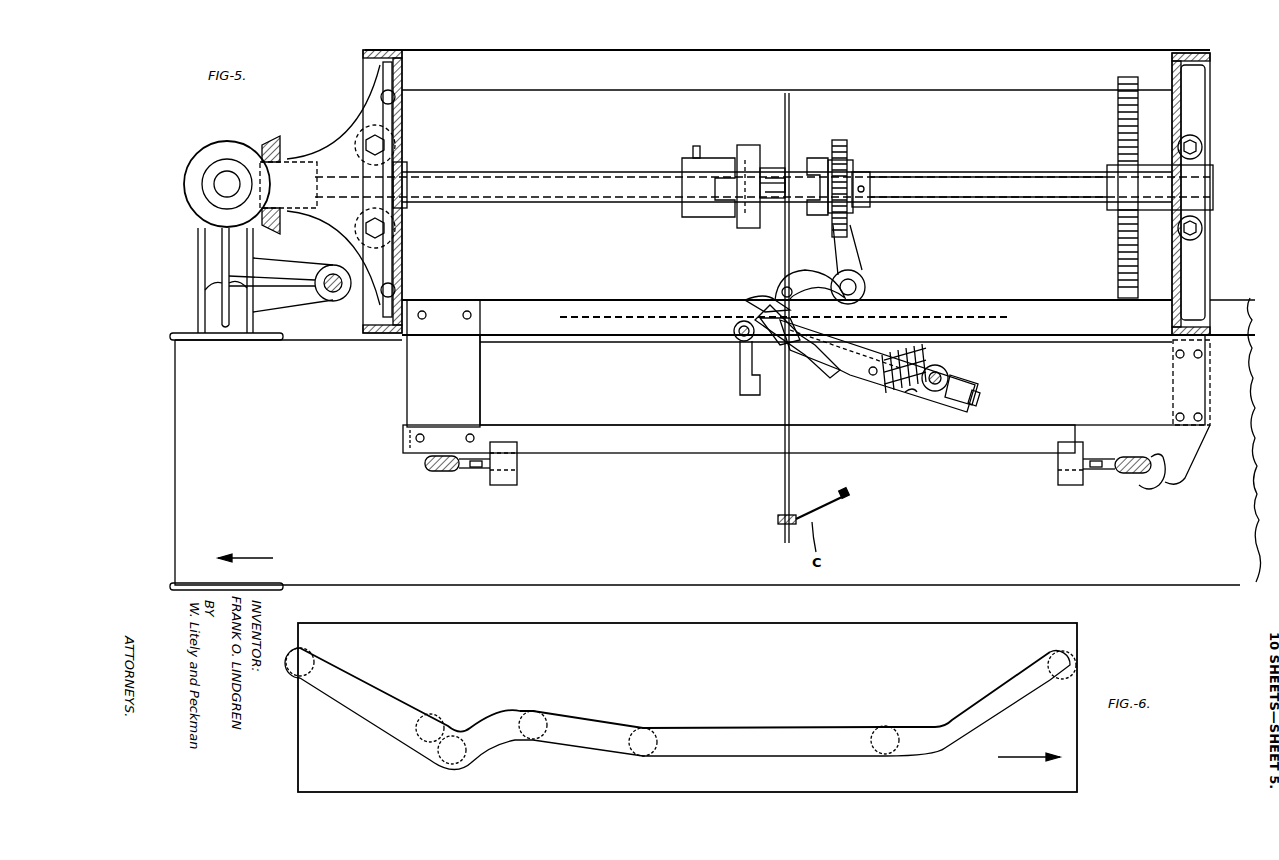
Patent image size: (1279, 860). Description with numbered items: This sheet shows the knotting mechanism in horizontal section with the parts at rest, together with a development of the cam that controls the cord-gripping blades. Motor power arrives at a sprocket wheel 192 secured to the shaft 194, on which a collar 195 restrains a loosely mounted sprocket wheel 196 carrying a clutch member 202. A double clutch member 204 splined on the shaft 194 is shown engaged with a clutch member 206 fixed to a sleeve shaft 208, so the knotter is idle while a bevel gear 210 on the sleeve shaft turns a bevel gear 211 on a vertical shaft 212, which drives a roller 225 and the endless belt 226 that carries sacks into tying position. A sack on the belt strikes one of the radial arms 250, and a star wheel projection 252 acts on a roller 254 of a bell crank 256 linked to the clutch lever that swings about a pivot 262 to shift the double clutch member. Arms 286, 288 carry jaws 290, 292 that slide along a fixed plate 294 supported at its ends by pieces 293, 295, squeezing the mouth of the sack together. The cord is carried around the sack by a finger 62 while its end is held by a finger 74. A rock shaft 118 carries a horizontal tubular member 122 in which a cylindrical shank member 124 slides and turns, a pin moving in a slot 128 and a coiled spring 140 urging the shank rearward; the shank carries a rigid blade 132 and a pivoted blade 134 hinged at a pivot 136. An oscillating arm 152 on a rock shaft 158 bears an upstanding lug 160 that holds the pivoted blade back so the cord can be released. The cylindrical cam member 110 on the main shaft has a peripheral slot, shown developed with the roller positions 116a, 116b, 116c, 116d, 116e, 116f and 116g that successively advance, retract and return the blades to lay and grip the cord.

In FIG. 5, the sleeve shaft 208 is at (594, 185).
In FIG. 5, the bevel gear 211 is at (230, 147).
In FIG. 5, the vertical shaft 212 is at (222, 180).
In FIG. 5, the bevel gear 210 is at (272, 139).
In FIG. 5, the roller 225 is at (172, 340).
In FIG. 5, the endless belt 226 is at (507, 577).
In FIG. 5, the supporting piece 293 is at (410, 387).
In FIG. 5, the supporting piece 295 is at (1190, 383).
In FIG. 5, the fixed plate 294 is at (980, 448).
In FIG. 5, the arm 286 is at (444, 472).
In FIG. 5, the jaw 290 is at (513, 472).
In FIG. 5, the jaw 292 is at (1071, 478).
In FIG. 5, the arm 288 is at (1136, 476).
In FIG. 5, the radially extending arm 250 is at (783, 482).
In FIG. 5, the finger 74 is at (779, 524).
In FIG. 5, the finger 62 is at (840, 498).
In FIG. 5, the clutch member 206 is at (708, 160).
In FIG. 5, the double clutch member 204 is at (762, 160).
In FIG. 5, the pivot 262 is at (775, 188).
In FIG. 5, the clutch member 202 is at (818, 158).
In FIG. 5, the sprocket wheel 196 is at (848, 142).
In FIG. 5, the collar 195 is at (870, 165).
In FIG. 5, the shaft 194 is at (999, 188).
In FIG. 5, the sprocket wheel 192 is at (1128, 122).
In FIG. 5, the bell crank 256 is at (855, 260).
In FIG. 5, the roller 254 is at (788, 278).
In FIG. 5, the star wheel projection 252 is at (760, 293).
In FIG. 5, the upstanding lug 160 is at (770, 322).
In FIG. 5, the rock shaft 158 is at (740, 341).
In FIG. 5, the oscillating arm 152 is at (742, 384).
In FIG. 5, the rigid blade 132 is at (820, 360).
In FIG. 5, the pivoted blade 134 is at (860, 330).
In FIG. 5, the pivot 136 is at (872, 376).
In FIG. 5, the slot 128 is at (908, 362).
In FIG. 5, the rock shaft 118 is at (945, 372).
In FIG. 5, the horizontal tubular member 122 is at (965, 385).
In FIG. 5, the cylindrical shank member 124 is at (978, 399).
In FIG. 5, the coiled spring 140 is at (910, 392).
In FIG. 6, the cylindrical cam member 110 is at (1065, 774).
In FIG. 6, the roller position 116a is at (1065, 659).
In FIG. 6, the roller position 116b is at (892, 726).
In FIG. 6, the roller position 116c is at (649, 726).
In FIG. 6, the roller position 116d is at (540, 720).
In FIG. 6, the roller position 116e is at (462, 740).
In FIG. 6, the roller position 116f is at (432, 716).
In FIG. 6, the roller position 116g is at (302, 658).